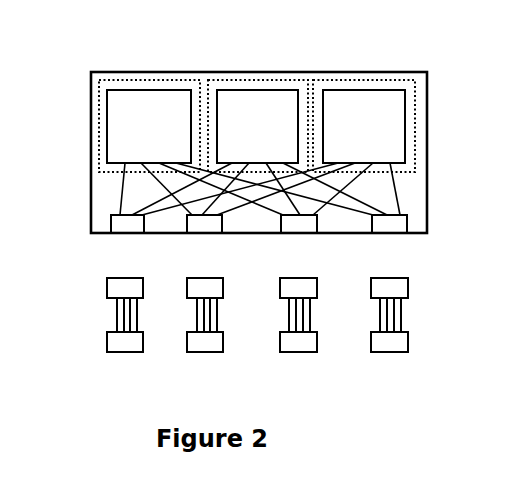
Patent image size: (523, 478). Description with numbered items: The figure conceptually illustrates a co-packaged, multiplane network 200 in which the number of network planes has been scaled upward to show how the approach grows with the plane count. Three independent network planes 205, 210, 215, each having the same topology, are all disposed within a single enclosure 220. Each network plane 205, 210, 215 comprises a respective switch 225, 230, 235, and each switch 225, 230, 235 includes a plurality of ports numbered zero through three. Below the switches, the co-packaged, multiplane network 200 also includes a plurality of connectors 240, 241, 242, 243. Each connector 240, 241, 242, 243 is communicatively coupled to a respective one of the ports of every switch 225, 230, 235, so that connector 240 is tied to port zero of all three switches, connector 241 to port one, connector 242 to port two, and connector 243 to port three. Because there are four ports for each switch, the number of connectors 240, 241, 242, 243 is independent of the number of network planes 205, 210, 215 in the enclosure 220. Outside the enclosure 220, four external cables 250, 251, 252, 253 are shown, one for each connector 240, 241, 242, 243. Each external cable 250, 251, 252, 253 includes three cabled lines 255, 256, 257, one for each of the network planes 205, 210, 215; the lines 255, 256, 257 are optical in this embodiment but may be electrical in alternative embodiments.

The co-packaged, multiplane network 200 is at (117, 31).
The network plane 205 is at (99, 128).
The network plane 210 is at (259, 80).
The network plane 215 is at (427, 125).
The enclosure 220 is at (91, 72).
The switch 225 is at (149, 126).
The switch 230 is at (257, 126).
The switch 235 is at (364, 126).
The connector 240 is at (111, 215).
The connector 241 is at (201, 234).
The connector 242 is at (300, 234).
The connector 243 is at (407, 215).
The external cable 250 is at (122, 374).
The external cable 251 is at (203, 390).
The external cable 252 is at (296, 385).
The external cable 253 is at (388, 367).
The cabled line 255 is at (120, 299).
The cabled line 256 is at (120, 314).
The cabled line 257 is at (120, 330).